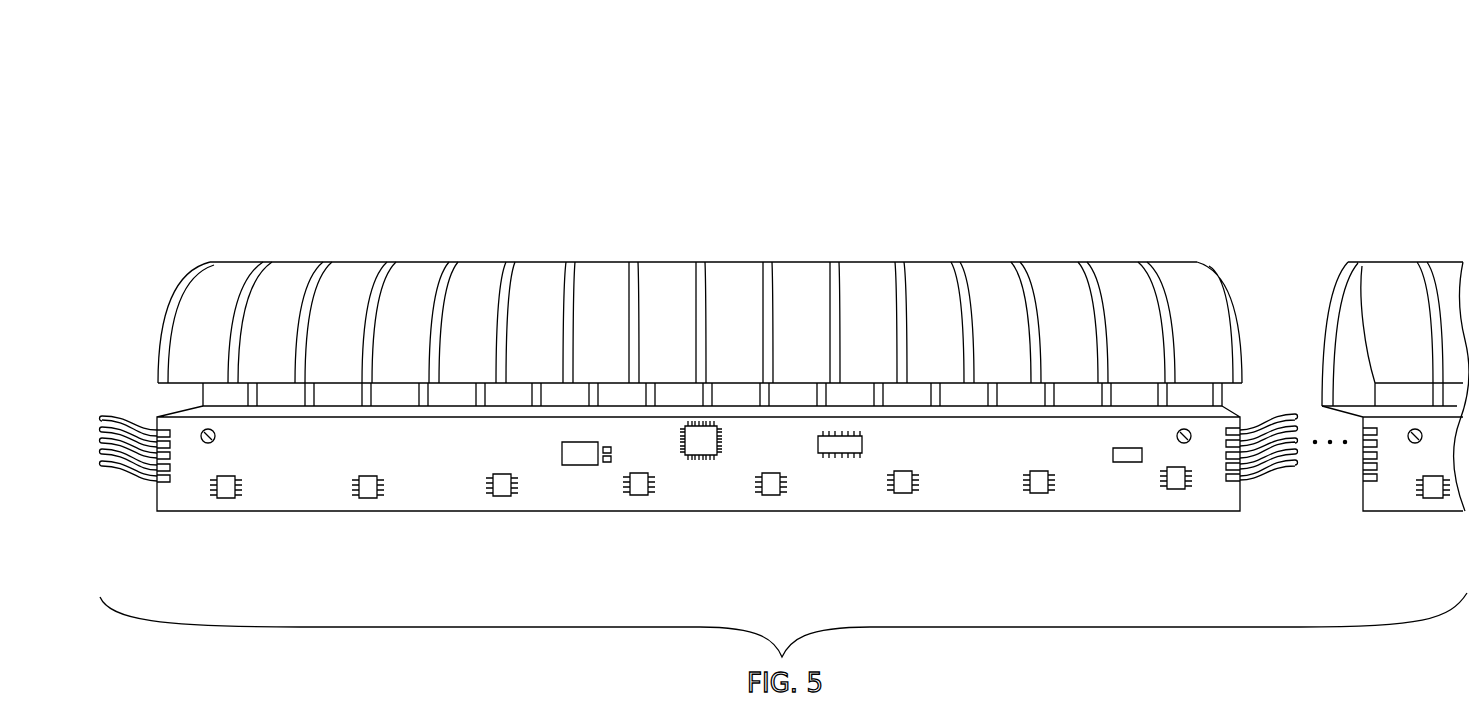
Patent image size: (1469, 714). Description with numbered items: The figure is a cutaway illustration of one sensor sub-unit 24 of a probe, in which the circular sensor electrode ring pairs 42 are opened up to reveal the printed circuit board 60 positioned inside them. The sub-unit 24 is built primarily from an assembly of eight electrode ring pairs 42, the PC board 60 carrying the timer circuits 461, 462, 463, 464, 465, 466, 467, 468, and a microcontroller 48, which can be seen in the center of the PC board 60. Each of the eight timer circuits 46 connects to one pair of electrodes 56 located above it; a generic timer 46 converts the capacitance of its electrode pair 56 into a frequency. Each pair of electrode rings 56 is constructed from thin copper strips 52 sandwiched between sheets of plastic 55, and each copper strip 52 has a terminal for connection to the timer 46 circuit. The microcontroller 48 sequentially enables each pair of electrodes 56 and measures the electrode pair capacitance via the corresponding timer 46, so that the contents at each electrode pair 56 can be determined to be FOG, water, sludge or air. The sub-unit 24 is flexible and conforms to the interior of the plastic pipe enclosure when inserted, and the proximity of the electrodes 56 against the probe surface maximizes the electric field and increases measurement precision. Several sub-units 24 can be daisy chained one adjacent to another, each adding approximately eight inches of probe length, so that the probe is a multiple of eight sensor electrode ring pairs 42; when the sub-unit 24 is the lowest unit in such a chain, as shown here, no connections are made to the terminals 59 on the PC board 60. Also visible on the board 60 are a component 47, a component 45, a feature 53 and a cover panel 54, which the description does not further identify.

The sensor sub-unit 24 is at (1055, 108).
The sensor electrode ring pairs 42 is at (813, 341).
The sensor 45 is at (1128, 456).
The timer circuit 46 is at (697, 516).
The first timer circuit 461 is at (225, 497).
The second timer circuit 462 is at (367, 497).
The third timer circuit 463 is at (500, 492).
The fourth timer circuit 464 is at (637, 492).
The fifth timer circuit 465 is at (771, 492).
The sixth timer circuit 466 is at (902, 492).
The seventh timer circuit 467 is at (1040, 492).
The eighth timer circuit 468 is at (1176, 490).
The driver circuit 47 is at (842, 447).
The microcontroller 48 is at (701, 448).
The copper strip 52 is at (1178, 272).
The standoff 53 is at (1200, 398).
The cover panel 54 is at (1107, 272).
The sheets of plastic 55 is at (1082, 260).
The pair of electrodes 56 is at (1072, 258).
The terminals 59 is at (163, 500).
The printed circuit board 60 is at (982, 518).